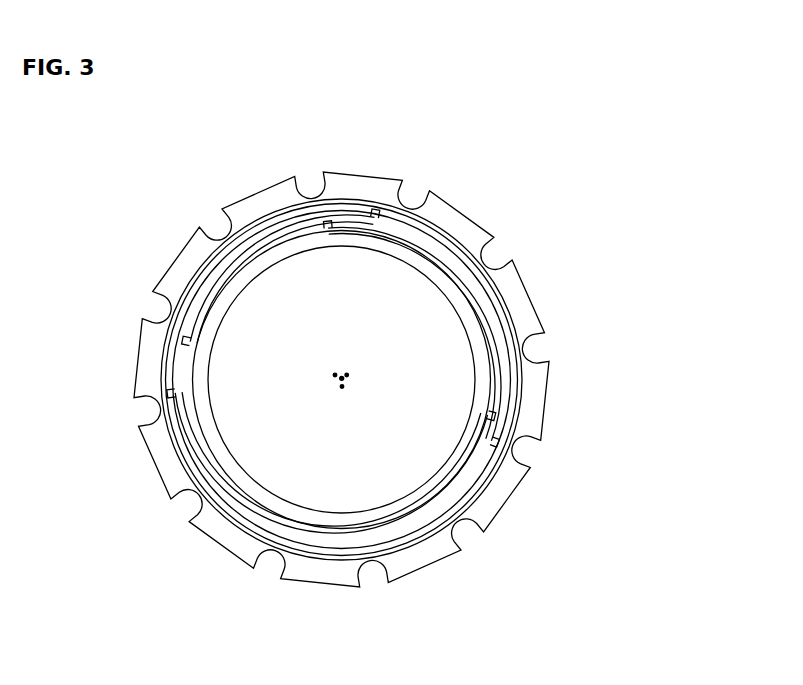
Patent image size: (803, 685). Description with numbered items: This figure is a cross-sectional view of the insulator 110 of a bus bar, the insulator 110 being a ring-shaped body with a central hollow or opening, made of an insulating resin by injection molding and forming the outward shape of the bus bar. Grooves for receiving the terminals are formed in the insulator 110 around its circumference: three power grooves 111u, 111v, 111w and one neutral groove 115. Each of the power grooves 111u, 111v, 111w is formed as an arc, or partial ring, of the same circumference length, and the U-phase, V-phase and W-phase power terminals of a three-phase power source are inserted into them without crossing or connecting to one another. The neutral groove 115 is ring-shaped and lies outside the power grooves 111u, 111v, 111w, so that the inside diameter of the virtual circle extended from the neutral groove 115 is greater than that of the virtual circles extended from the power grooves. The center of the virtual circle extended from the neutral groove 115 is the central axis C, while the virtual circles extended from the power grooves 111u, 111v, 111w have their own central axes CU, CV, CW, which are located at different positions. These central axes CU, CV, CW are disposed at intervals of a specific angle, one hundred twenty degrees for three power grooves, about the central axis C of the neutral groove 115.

The insulator 110 is at (460, 214).
The neutral groove 115 is at (505, 305).
The power groove 111u is at (176, 437).
The power groove 111v is at (194, 333).
The power groove 111w is at (510, 403).
The central axis of virtual circle extended from the neutral groove C is at (342, 373).
The central axis of virtual circle extended from power groove 111u CU is at (333, 376).
The central axis of virtual circle extended from power groove 111v CV is at (350, 376).
The central axis of virtual circle extended from power groove 111w CW is at (342, 389).